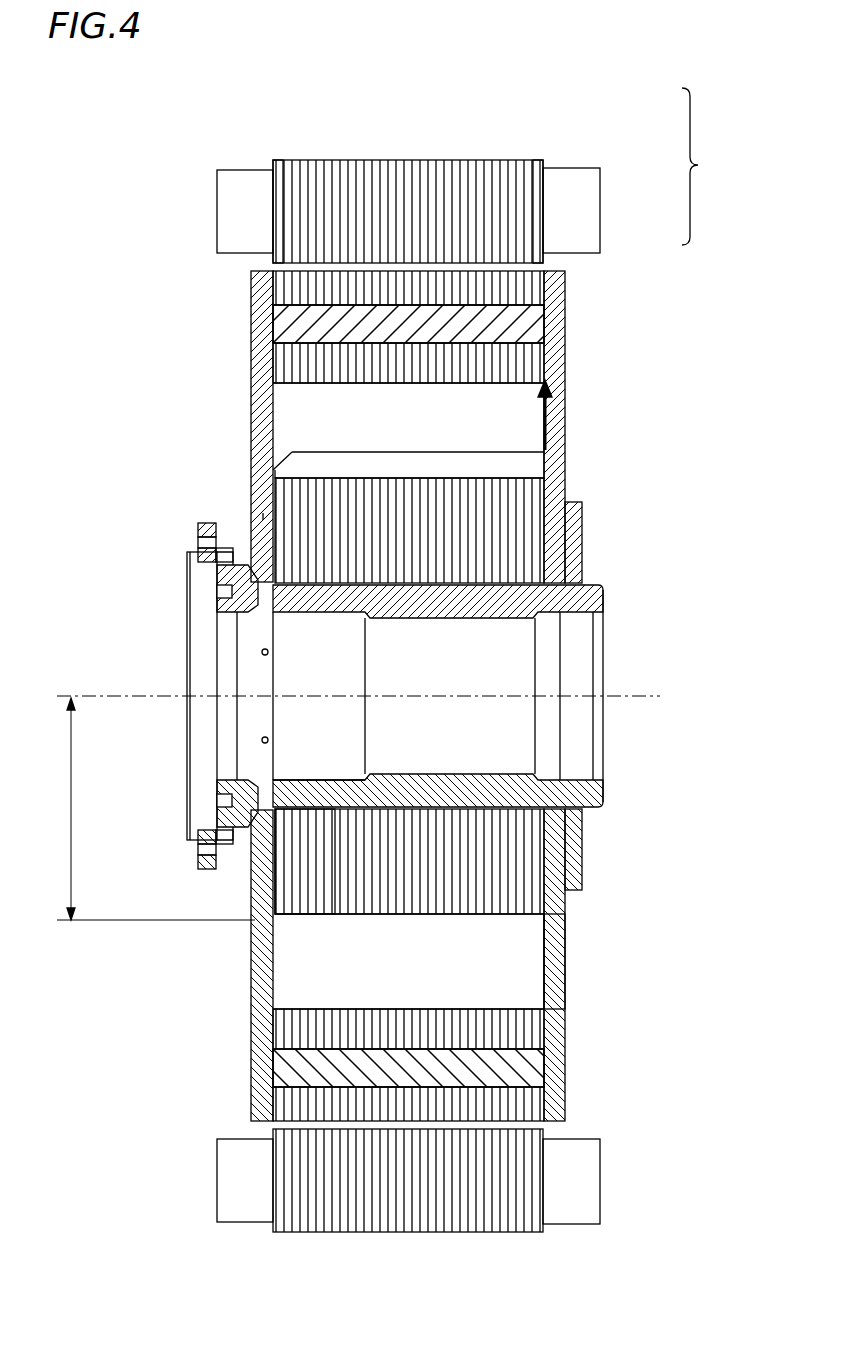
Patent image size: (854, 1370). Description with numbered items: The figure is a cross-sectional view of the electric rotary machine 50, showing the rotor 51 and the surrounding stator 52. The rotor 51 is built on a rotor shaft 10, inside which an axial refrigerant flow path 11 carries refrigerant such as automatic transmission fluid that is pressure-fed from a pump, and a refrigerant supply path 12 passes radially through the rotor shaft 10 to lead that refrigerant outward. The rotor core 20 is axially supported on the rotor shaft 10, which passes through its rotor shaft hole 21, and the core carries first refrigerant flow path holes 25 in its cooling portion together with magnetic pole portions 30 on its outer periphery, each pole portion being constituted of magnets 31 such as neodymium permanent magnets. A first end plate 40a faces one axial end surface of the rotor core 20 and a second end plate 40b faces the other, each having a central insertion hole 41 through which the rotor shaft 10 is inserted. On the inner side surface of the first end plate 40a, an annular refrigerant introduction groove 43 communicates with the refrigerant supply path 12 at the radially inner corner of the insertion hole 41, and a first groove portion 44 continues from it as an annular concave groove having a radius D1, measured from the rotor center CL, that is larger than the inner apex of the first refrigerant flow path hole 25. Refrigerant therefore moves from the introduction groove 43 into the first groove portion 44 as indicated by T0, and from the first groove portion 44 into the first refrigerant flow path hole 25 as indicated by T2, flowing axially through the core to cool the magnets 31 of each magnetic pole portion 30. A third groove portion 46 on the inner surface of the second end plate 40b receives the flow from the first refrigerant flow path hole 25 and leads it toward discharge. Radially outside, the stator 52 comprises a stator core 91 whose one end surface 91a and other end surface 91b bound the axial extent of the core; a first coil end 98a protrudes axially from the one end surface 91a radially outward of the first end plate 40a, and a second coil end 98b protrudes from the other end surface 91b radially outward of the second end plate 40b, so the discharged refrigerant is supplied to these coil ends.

The rotor shaft 10 is at (464, 696).
The refrigerant flow path 11 is at (513, 613).
The refrigerant supply path 12 is at (217, 775).
The rotor core 20 is at (450, 262).
The rotor shaft hole 21 is at (490, 600).
The first refrigerant flow path hole 25 is at (405, 405).
The magnetic pole portion 30 is at (408, 697).
The magnet 31 is at (380, 320).
The first end plate 40a is at (262, 952).
The second end plate 40b is at (565, 920).
The insertion hole 41 is at (560, 795).
The refrigerant introduction groove 43 is at (280, 795).
The first groove portion 44 is at (285, 893).
The third groove portion 46 is at (530, 965).
The electric rotary machine 50 is at (705, 166).
The rotor 51 is at (421, 672).
The stator 52 is at (422, 649).
The stator core 91 is at (300, 195).
The one end surface 91a is at (270, 180).
The other end surface 91b is at (548, 172).
The first coil end 98a is at (235, 185).
The second coil end 98b is at (570, 180).
The refrigerant introduction flow T0 is at (263, 513).
The refrigerant supply flow T2 is at (412, 429).
The radius of first groove portion D1 is at (148, 809).
The center of rotor CL is at (622, 695).